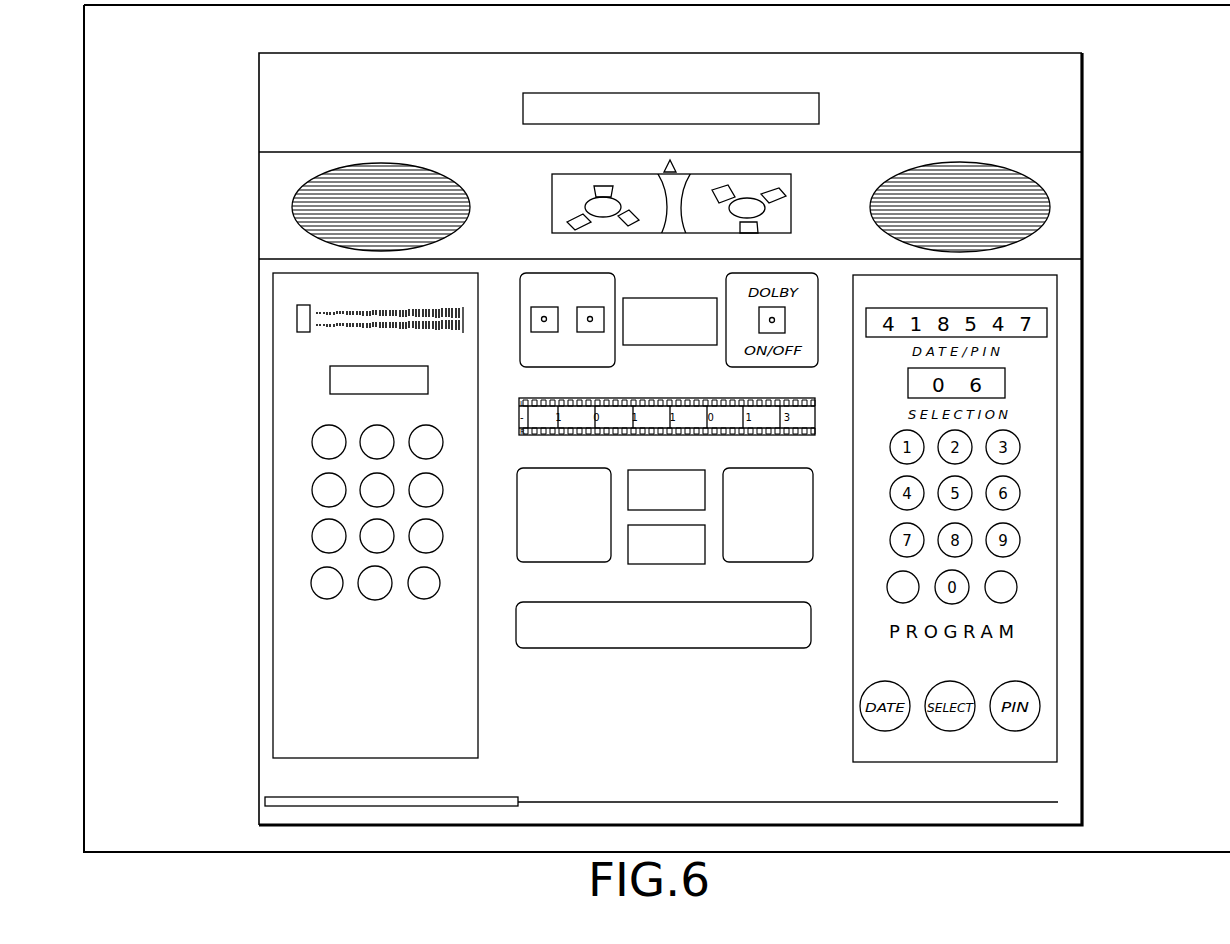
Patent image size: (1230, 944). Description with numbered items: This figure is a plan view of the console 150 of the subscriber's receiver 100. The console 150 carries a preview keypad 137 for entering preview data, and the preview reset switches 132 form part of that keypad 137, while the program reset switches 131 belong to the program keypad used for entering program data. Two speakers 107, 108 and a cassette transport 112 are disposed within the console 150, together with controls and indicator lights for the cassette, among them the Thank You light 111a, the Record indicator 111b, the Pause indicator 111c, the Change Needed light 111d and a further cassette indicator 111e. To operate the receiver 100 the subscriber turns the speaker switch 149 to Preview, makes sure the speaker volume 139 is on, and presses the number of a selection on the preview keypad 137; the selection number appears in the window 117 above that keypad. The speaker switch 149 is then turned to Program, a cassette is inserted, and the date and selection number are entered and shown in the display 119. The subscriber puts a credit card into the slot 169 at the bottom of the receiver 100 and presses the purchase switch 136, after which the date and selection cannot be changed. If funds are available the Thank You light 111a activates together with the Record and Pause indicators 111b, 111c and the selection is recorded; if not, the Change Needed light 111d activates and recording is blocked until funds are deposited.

The receiver 100 is at (699, 46).
The console 150 is at (560, 52).
The display window 119 is at (793, 92).
The speaker 107 is at (292, 211).
The speaker 108 is at (1050, 207).
The cassette transport 112 is at (795, 193).
The speaker switch 149 is at (542, 272).
The cassette control and indicator light 111e is at (655, 298).
The Record indicator 111b is at (558, 468).
The Thank You light 111a is at (678, 470).
The Pause indicator 111c is at (756, 470).
The Change Needed light 111d is at (667, 565).
The purchase switch 136 is at (640, 650).
The preview keypad 137 is at (273, 670).
The speaker volume 139 is at (297, 319).
The selection display window 117 is at (330, 380).
The preview reset switches 132 is at (311, 583).
The program reset switches 131 is at (887, 587).
The credit card slot 169 is at (653, 802).